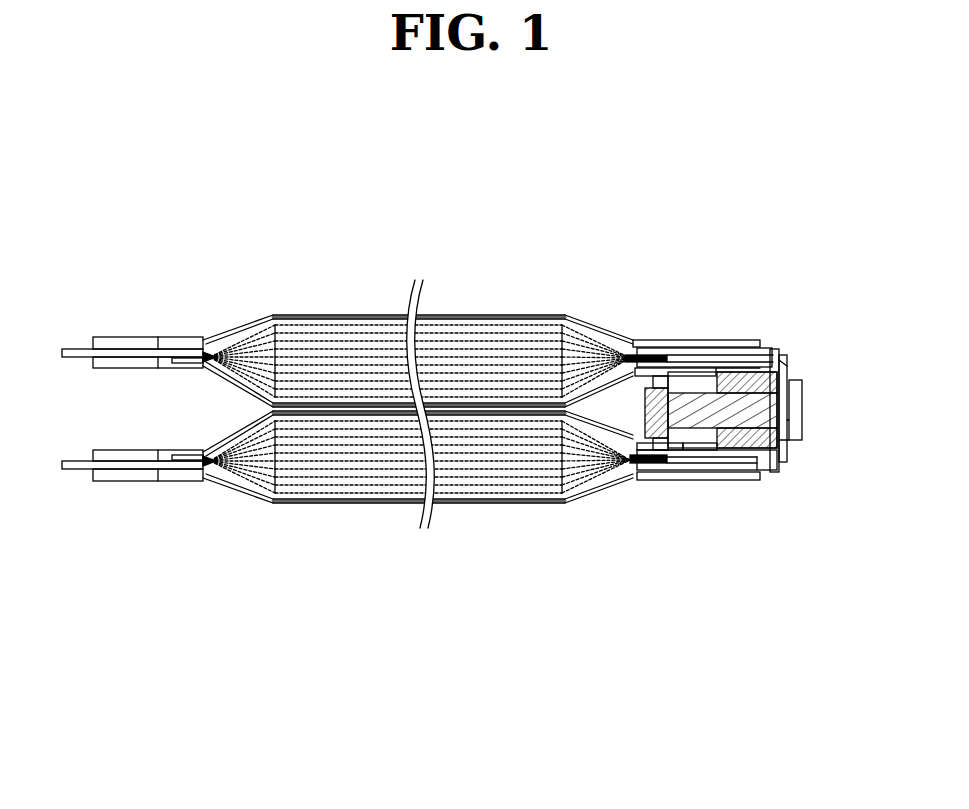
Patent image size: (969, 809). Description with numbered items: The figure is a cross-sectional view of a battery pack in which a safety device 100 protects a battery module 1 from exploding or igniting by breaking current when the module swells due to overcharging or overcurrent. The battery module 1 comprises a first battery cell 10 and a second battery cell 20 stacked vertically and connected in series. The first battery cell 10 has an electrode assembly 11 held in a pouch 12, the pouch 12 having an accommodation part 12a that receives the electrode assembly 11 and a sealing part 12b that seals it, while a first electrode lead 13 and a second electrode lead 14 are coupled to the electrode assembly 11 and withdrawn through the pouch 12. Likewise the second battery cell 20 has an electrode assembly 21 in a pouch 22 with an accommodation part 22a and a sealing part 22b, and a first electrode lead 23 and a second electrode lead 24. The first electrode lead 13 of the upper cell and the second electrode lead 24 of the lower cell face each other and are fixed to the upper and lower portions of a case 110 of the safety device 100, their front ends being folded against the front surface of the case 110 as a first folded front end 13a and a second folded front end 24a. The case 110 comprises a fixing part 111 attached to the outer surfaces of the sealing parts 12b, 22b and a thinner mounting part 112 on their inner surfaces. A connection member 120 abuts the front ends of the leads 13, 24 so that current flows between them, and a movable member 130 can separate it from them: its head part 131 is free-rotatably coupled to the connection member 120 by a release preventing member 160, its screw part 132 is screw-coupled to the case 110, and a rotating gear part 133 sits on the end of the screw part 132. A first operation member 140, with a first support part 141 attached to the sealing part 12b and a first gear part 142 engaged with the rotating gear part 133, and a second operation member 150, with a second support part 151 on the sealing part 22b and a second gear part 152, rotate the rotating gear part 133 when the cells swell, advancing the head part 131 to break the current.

The battery module 1 is at (540, 693).
The first battery cell 10 is at (528, 233).
The electrode assembly 11 is at (520, 316).
The pouch 12 is at (600, 272).
The accommodation part 12a is at (598, 326).
The sealing part 12b is at (650, 340).
The first electrode lead 13 is at (738, 348).
The first folded front end 13a is at (779, 363).
The second electrode lead 14 is at (72, 349).
The second battery cell 20 is at (518, 592).
The electrode assembly 21 is at (518, 503).
The pouch 22 is at (620, 541).
The accommodation part 22a is at (597, 497).
The sealing part 22b is at (638, 487).
The first electrode lead 23 is at (72, 469).
The second electrode lead 24 is at (683, 478).
The second folded front end 24a is at (793, 440).
The safety device 100 is at (637, 650).
The case 110 is at (788, 307).
The fixing part 111 is at (789, 356).
The mounting part 112 is at (777, 349).
The connection member 120 is at (790, 398).
The movable member 130 is at (713, 517).
The head part 131 is at (797, 440).
The screw part 132 is at (750, 448).
The rotating gear part 133 is at (697, 448).
The first operation member 140 is at (717, 300).
The first support part 141 is at (672, 355).
The first gear part 142 is at (698, 355).
The second operation member 150 is at (640, 575).
The second support part 151 is at (643, 482).
The second gear part 152 is at (673, 482).
The release preventing member 160 is at (803, 420).